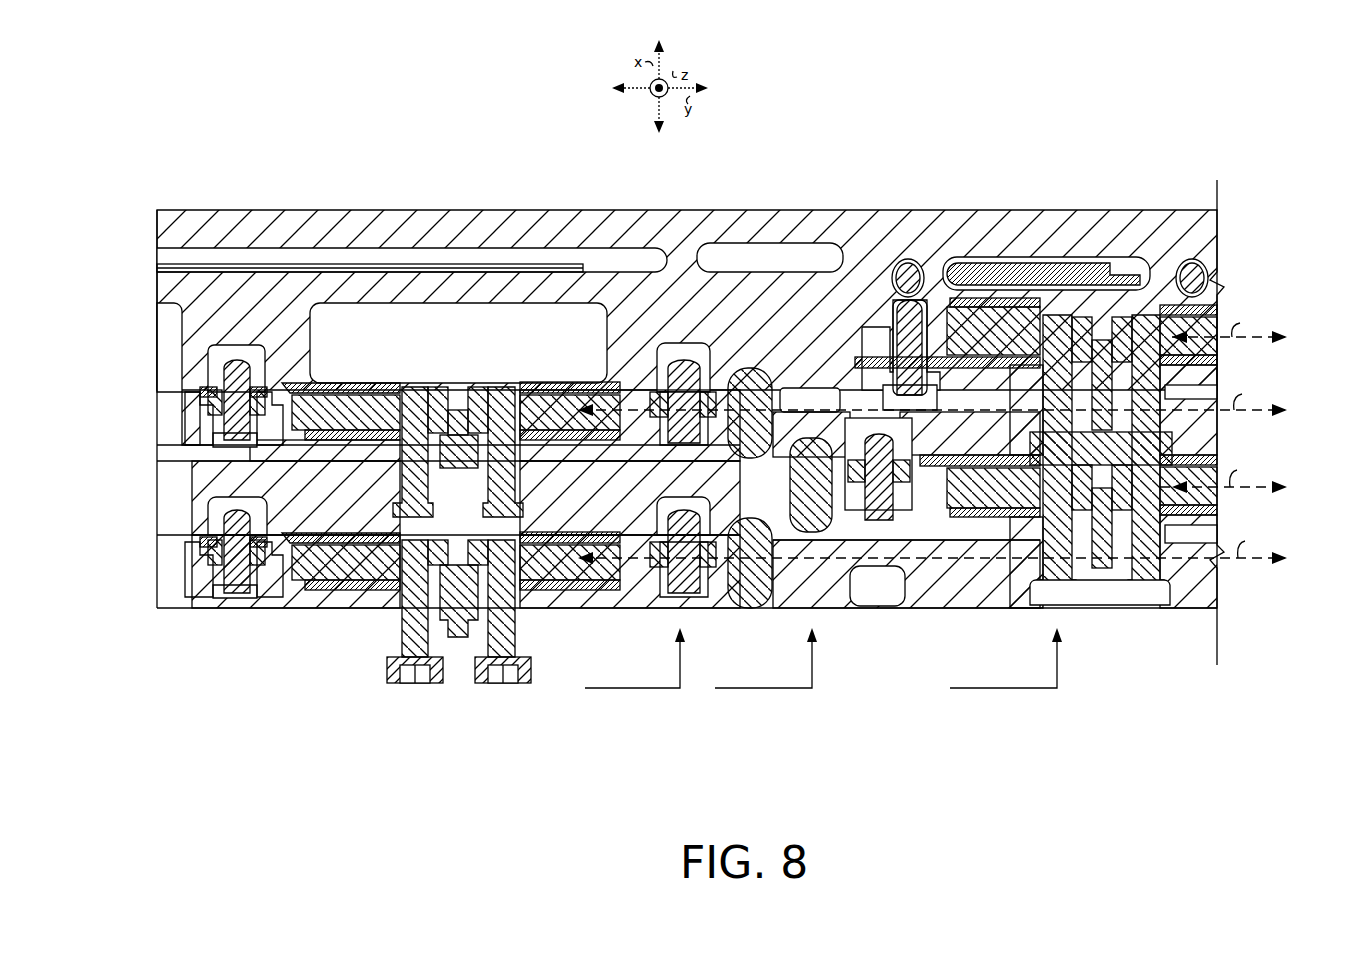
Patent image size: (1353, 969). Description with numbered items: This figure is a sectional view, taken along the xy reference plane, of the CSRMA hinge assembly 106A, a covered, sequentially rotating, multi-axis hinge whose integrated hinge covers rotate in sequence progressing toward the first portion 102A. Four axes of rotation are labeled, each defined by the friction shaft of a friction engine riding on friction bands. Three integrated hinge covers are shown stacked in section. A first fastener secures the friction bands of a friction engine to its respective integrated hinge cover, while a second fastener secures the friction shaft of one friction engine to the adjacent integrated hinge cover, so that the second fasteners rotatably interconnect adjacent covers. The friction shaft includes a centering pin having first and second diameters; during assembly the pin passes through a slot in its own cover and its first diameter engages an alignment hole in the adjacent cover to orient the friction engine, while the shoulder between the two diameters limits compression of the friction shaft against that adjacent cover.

The CSRMA hinge assembly 106A is at (308, 126).
The first portion 102A is at (938, 210).